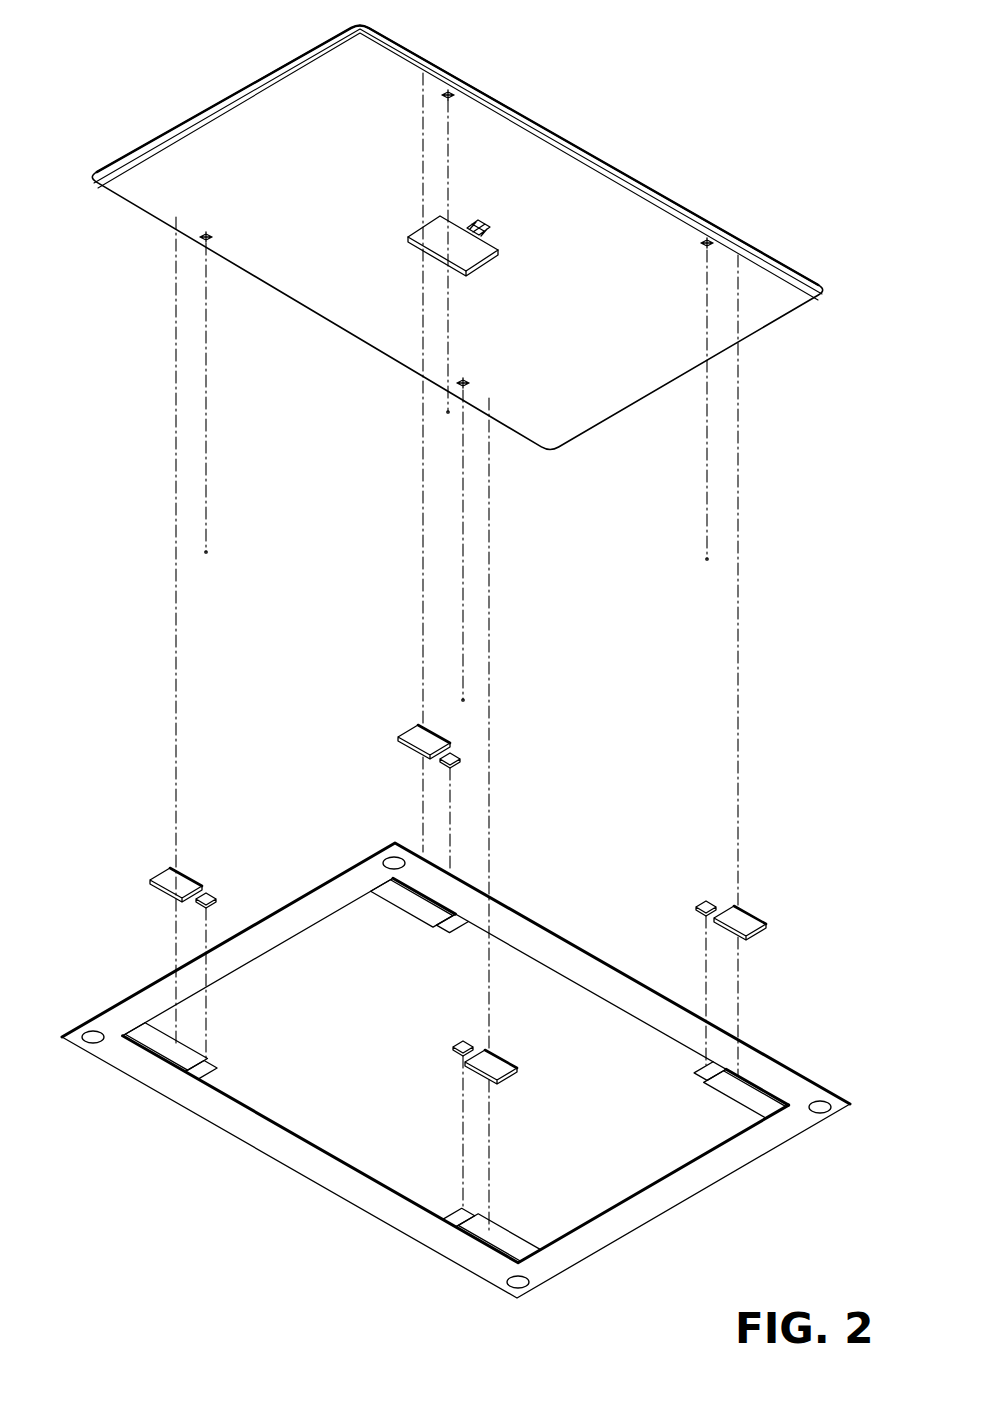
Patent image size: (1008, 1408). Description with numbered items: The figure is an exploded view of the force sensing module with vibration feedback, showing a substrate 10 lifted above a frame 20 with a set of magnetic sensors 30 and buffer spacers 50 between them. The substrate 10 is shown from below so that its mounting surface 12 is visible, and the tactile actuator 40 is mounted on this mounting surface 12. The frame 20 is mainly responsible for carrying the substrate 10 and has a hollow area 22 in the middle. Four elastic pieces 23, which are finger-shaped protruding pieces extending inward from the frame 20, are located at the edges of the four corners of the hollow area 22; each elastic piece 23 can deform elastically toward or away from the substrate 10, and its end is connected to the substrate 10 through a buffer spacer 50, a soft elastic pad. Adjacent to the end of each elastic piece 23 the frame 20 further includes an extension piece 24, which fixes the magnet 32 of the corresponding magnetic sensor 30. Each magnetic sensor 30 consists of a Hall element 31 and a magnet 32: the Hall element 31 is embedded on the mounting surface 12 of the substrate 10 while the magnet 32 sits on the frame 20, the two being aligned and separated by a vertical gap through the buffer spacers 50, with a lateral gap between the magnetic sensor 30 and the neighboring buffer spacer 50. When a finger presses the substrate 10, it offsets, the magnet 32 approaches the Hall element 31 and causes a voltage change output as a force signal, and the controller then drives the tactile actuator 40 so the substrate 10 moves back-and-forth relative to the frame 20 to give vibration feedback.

The substrate 10 is at (785, 320).
The mounting surface 12 is at (577, 176).
The frame 20 is at (643, 1217).
The hollow area 22 is at (693, 1148).
The elastic piece 23 is at (162, 1047).
The extension piece 24 is at (202, 1068).
The magnetic sensor 30 is at (279, 602).
The Hall element 31 is at (206, 552).
The magnet 32 is at (218, 897).
The tactile actuator 40 is at (407, 232).
The buffer spacer 50 is at (163, 884).